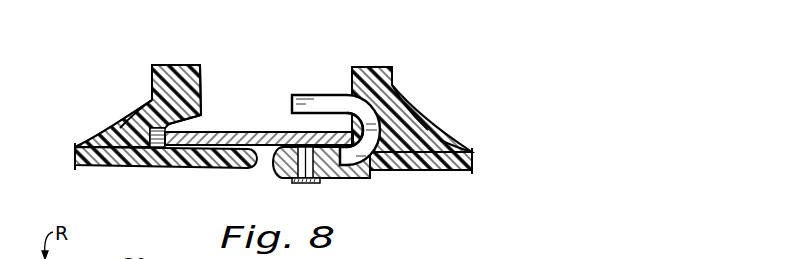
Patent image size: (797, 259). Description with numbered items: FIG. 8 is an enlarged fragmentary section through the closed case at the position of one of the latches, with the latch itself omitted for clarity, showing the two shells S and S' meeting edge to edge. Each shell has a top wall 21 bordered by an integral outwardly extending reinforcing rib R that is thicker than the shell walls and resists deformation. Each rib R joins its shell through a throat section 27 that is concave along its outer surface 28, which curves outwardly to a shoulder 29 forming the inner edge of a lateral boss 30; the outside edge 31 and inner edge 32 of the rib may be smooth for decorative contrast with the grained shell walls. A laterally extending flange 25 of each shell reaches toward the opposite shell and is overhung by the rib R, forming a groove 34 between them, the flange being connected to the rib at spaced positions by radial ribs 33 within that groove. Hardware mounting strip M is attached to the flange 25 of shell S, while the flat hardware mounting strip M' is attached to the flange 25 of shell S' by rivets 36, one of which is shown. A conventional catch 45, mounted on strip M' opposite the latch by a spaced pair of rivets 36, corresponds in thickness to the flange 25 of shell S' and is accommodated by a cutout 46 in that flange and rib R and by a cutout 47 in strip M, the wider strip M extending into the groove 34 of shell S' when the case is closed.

The top wall 21 is at (92, 142).
The laterally extending flange 25 is at (221, 157).
The throat section 27 is at (410, 137).
The outer surface 28 is at (149, 103).
The shoulder 29 is at (152, 80).
The lateral boss 30 is at (152, 72).
The outside edge 31 is at (167, 64).
The inner edge 32 is at (203, 84).
The radial ribs 33 is at (155, 150).
The groove 34 is at (187, 124).
The rivets 36 is at (308, 182).
The catch 45 is at (301, 97).
The cutout 46 is at (383, 163).
The cutout 47 is at (360, 124).
The rib R is at (194, 62).
The shell S is at (40, 156).
The shell S' is at (495, 154).
The hardware mounting strip M is at (259, 113).
The hardware mounting strip M' is at (323, 183).